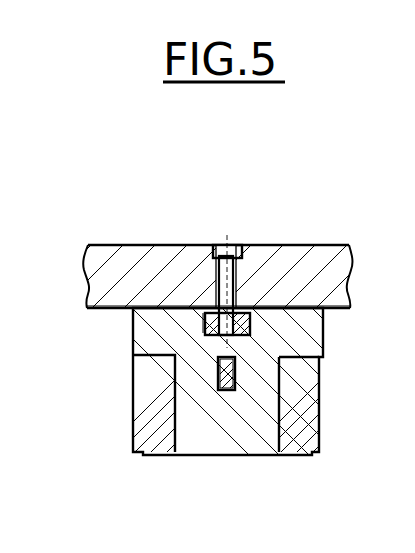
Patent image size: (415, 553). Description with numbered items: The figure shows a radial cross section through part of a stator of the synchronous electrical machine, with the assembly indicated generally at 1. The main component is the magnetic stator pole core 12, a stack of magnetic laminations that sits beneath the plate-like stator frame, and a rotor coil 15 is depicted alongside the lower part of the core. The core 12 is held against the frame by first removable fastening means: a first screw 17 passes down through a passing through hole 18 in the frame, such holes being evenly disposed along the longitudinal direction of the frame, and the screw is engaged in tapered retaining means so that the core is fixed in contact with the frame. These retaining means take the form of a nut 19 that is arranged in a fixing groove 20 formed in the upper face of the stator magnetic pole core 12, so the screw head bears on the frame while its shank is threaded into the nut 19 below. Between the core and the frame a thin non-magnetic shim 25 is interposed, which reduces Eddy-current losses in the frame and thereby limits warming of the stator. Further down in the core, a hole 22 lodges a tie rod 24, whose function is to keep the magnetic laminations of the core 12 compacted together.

The plate 1 is at (136, 244).
The magnetic stator pole core 12 is at (130, 345).
The rotor coil 15 is at (153, 418).
The first screw 17 is at (238, 248).
The passing through hole 18 is at (222, 280).
The nut 19 is at (203, 334).
The fixing groove 20 is at (207, 336).
The hole 22 is at (236, 379).
The tie rod 24 is at (221, 390).
The non-magnetic shim 25 is at (101, 308).